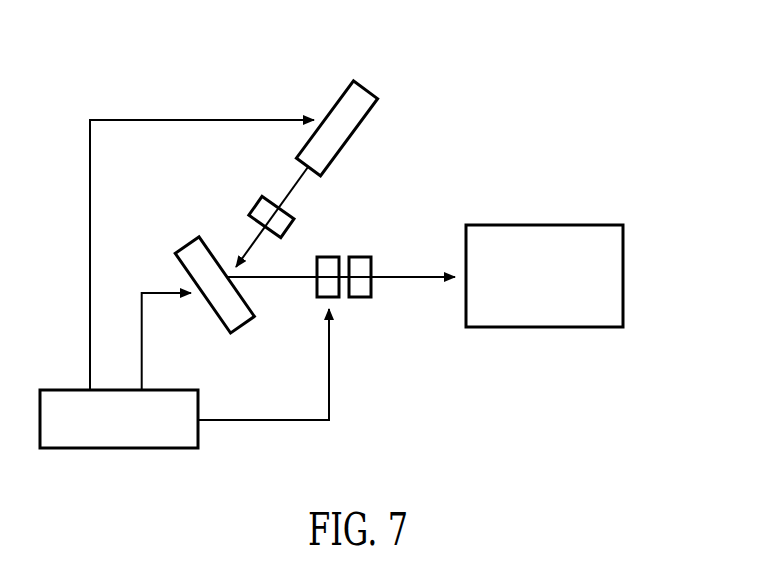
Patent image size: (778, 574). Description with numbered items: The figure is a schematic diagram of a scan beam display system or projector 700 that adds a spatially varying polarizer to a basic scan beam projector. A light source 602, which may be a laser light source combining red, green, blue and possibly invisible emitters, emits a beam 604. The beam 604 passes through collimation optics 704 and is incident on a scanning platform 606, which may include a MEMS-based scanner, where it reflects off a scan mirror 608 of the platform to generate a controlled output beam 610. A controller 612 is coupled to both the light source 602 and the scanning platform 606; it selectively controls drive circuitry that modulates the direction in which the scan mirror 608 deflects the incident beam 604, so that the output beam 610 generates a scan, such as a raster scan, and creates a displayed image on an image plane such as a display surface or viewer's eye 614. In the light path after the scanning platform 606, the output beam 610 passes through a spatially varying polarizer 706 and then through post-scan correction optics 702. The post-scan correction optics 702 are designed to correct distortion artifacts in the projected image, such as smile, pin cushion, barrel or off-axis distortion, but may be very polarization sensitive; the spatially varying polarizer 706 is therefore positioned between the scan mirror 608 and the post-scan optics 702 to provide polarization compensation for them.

The scan beam display system 700 is at (544, 56).
The light source 602 is at (351, 105).
The beam 604 is at (297, 183).
The collimation optics 704 is at (258, 206).
The scanning platform 606 is at (195, 252).
The scan mirror 608 is at (247, 303).
The spatially varying polarizer 706 is at (329, 256).
The post-scan correction optics 702 is at (362, 256).
The output beam 610 is at (400, 279).
The display surface or viewer's eye 614 is at (560, 224).
The controller 612 is at (120, 449).